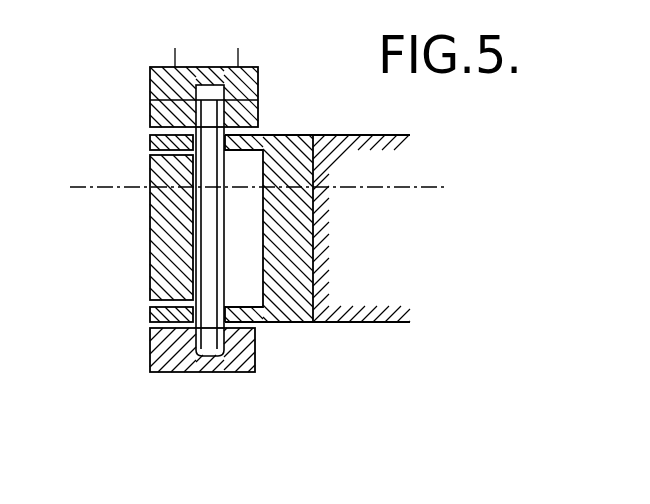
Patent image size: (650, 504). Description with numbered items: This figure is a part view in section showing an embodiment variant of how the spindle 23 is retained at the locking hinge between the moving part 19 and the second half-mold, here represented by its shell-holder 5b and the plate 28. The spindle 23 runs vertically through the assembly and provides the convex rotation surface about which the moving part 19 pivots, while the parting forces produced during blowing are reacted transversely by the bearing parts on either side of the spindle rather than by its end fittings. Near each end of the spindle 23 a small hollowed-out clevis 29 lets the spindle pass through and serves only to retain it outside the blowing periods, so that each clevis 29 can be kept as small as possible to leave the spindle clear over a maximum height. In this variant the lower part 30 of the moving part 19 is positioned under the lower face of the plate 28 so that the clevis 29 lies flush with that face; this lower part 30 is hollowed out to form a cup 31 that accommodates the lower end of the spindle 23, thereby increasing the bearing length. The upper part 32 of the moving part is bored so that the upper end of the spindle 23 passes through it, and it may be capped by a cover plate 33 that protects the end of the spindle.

The shell-holder 5b is at (368, 322).
The moving part 19 is at (150, 258).
The spindle 23 is at (214, 249).
The plate 28 is at (303, 323).
The clevis 29 is at (150, 141).
The lower part 30 is at (173, 352).
The cup 31 is at (227, 338).
The upper part 32 is at (150, 103).
The cover plate 33 is at (230, 80).